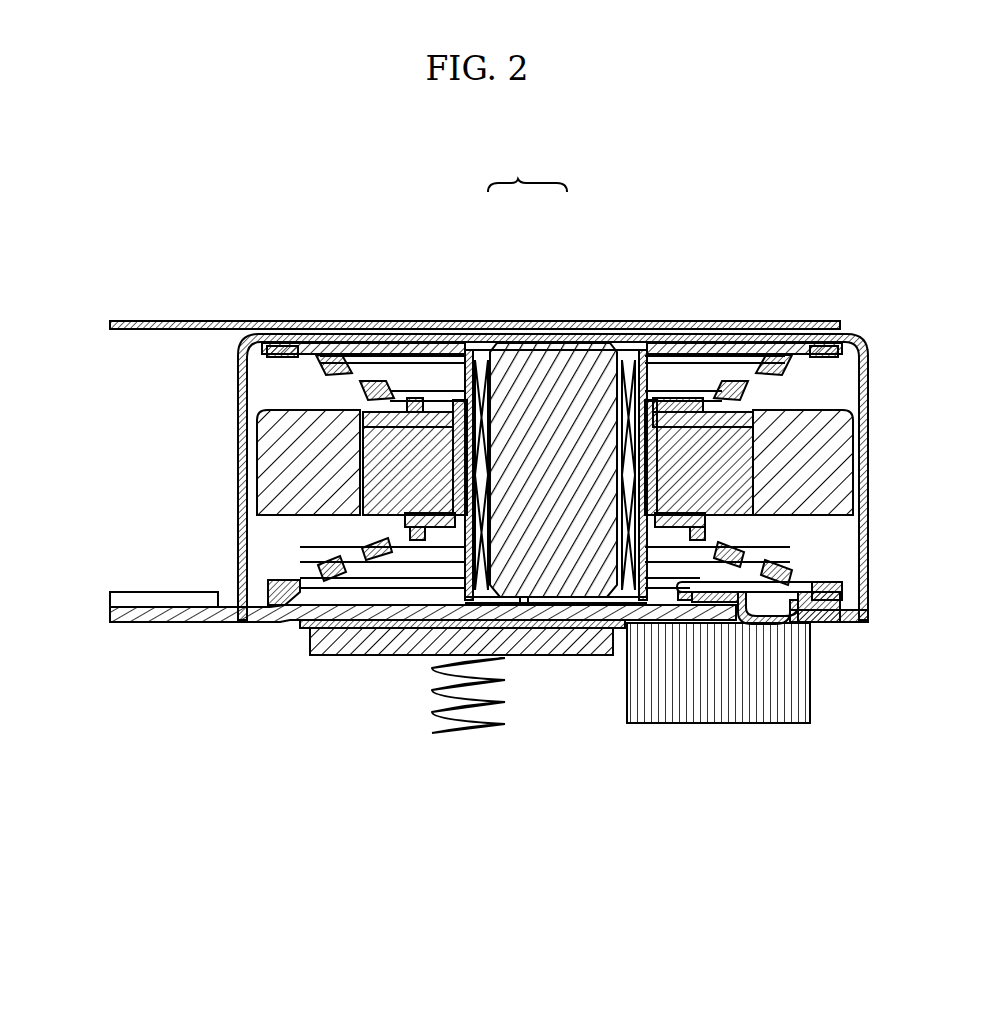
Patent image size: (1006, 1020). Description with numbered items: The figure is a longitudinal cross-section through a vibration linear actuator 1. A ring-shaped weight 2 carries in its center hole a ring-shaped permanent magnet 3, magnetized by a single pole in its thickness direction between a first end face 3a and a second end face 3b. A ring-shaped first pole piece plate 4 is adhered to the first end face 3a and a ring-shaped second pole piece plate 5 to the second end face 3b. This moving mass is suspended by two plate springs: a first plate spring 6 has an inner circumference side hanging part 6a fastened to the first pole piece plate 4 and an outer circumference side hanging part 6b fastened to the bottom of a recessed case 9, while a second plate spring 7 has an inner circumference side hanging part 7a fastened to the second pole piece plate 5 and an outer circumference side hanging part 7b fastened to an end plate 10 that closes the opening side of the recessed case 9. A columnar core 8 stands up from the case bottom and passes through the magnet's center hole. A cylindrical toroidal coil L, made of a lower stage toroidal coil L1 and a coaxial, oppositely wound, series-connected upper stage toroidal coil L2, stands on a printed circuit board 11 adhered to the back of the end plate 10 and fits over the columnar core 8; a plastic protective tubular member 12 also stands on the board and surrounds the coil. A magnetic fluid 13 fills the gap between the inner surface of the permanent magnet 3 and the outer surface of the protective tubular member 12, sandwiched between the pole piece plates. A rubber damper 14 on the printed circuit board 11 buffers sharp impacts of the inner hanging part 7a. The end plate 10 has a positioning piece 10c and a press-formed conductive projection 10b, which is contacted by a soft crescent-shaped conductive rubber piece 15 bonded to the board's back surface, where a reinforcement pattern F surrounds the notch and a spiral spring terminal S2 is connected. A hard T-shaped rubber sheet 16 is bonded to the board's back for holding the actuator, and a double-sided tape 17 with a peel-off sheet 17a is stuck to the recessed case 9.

The vibration linear actuator 1 is at (155, 184).
The ring-shaped weight 2 is at (862, 463).
The ring-shaped permanent magnet 3 is at (400, 440).
The first end face 3a is at (407, 415).
The second end face 3b is at (372, 518).
The first pole piece plate 4 is at (440, 410).
The second pole piece plate 5 is at (320, 563).
The first plate spring 6 is at (835, 387).
The inner circumference side hanging part 6a is at (688, 390).
The outer circumference side hanging part 6b is at (840, 358).
The second plate spring 7 is at (780, 568).
The inner circumference side hanging part 7a is at (795, 528).
The outer circumference side hanging part 7b is at (842, 592).
The columnar core 8 is at (553, 370).
The recessed case 9 is at (238, 432).
The end plate 10 is at (244, 624).
The conductive projection 10b is at (768, 626).
The positioning piece 10c is at (135, 624).
The printed circuit board 11 is at (523, 612).
The protective tubular member 12 is at (660, 352).
The magnetic fluid 13 is at (703, 425).
The rubber damper 14 is at (400, 628).
The conductive rubber piece 15 is at (752, 724).
The rubber sheet 16 is at (362, 657).
The double-sided tape 17 is at (435, 342).
The peel-off sheet 17a is at (215, 321).
The toroidal coil L is at (527, 165).
The lower stage toroidal coil L1 is at (520, 500).
The upper stage toroidal coil L2 is at (493, 500).
The spiral spring terminal S2 is at (465, 727).
The reinforcement pattern F is at (322, 655).